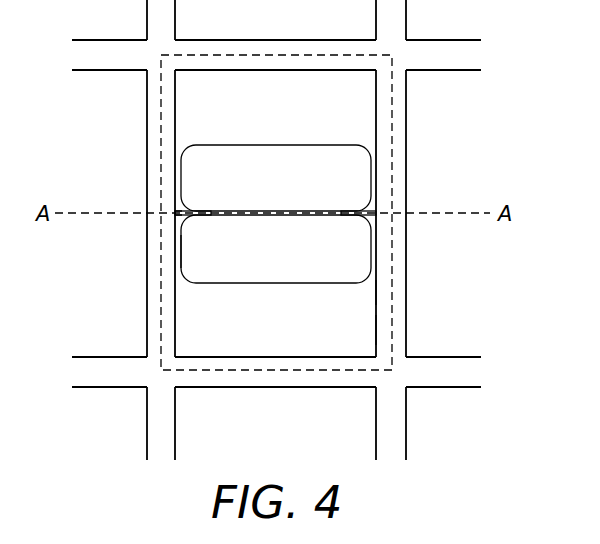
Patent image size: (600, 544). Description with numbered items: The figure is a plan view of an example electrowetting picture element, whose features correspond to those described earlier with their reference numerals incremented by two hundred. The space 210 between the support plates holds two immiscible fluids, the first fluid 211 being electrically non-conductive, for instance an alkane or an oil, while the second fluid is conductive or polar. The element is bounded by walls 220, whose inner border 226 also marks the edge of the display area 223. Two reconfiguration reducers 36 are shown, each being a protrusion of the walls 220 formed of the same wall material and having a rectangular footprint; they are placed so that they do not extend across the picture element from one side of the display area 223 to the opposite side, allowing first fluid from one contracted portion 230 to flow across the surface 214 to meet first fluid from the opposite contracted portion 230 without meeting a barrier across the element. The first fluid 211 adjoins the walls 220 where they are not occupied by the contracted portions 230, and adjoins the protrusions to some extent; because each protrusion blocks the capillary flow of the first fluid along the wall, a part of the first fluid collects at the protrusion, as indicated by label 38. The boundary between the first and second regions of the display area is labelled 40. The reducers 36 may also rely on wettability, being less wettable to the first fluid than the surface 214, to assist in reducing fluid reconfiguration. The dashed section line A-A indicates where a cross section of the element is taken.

The reconfiguration reducer 36 is at (342, 210).
The collected part of first fluid at protrusion 38 is at (177, 209).
The boundary between first and second regions of the display area 40 is at (180, 257).
The space between the support plates 210 is at (355, 255).
The first fluid 211 is at (378, 326).
The surface 214 is at (355, 172).
The walls 220 is at (382, 95).
The display area 223 is at (186, 305).
The inner border of the wall 226 is at (378, 291).
The contracted portions 230 is at (186, 98).